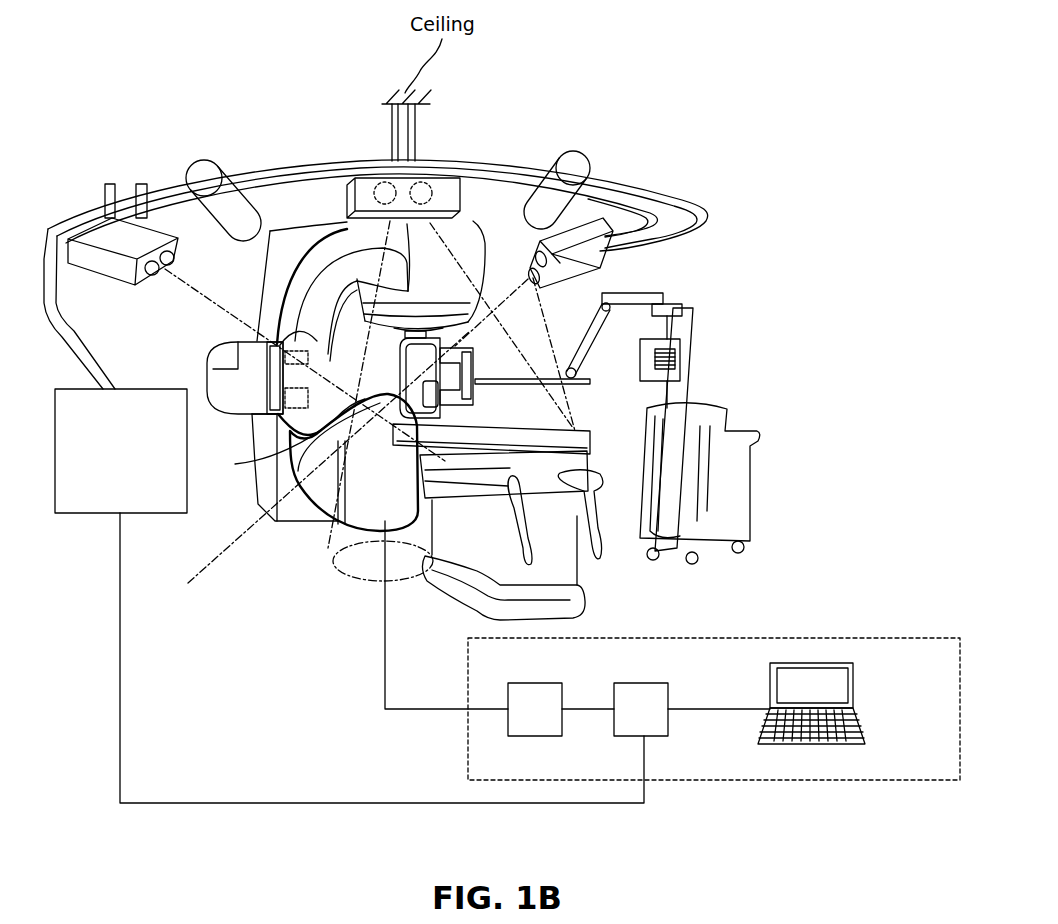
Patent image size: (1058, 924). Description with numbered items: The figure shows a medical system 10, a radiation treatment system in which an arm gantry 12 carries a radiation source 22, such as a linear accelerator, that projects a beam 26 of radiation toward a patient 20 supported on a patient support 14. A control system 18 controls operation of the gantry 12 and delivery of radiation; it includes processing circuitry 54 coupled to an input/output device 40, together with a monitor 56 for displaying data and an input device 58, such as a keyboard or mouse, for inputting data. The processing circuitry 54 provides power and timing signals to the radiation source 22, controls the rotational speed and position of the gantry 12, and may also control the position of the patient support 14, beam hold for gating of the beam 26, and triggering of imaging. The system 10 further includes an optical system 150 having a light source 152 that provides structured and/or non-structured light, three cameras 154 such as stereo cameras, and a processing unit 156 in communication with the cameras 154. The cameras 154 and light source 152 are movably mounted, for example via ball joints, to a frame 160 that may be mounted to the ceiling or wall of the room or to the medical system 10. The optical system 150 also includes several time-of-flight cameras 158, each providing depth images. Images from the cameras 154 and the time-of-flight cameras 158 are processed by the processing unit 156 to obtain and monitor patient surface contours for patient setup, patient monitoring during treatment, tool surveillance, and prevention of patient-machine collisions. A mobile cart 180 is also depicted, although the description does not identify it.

The medical system 10 is at (708, 88).
The arm gantry 12 is at (345, 238).
The patient support 14 is at (568, 437).
The control system 18 is at (848, 636).
The patient 20 is at (480, 288).
The radiation source 22 is at (478, 318).
The beam 26 is at (262, 470).
The input/output device 40 is at (563, 716).
The processing circuitry 54 is at (669, 716).
The monitor 56 is at (853, 683).
The input device 58 is at (863, 736).
The optical system 150 is at (720, 215).
The light source 152 is at (428, 182).
The cameras 154 is at (380, 184).
The processing unit 156 is at (97, 512).
The time-of-flight cameras 158 is at (205, 165).
The frame 160 is at (508, 165).
The mobile cart 180 is at (687, 433).